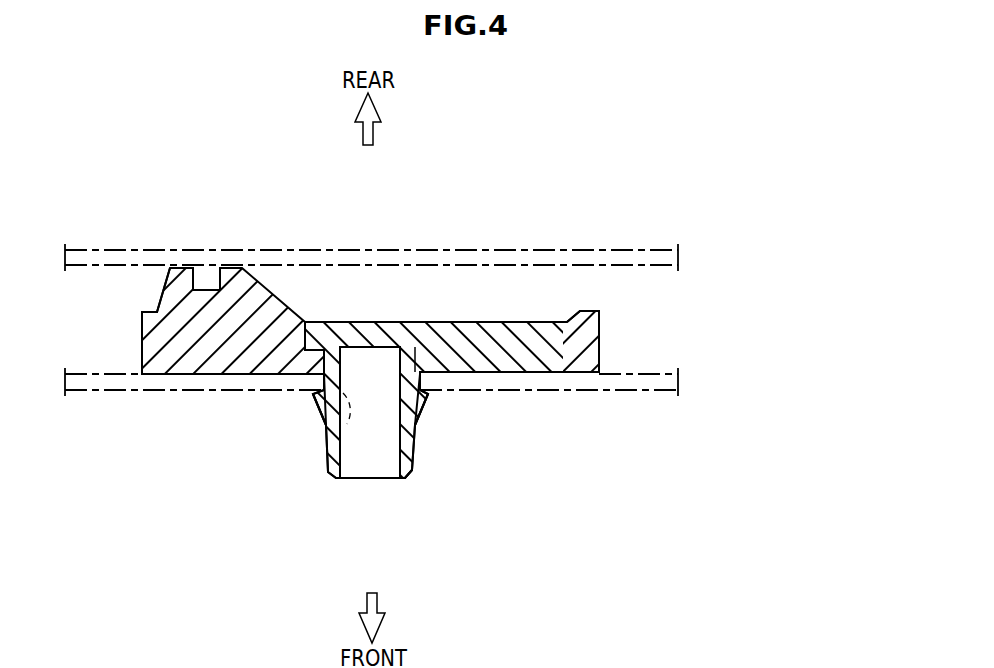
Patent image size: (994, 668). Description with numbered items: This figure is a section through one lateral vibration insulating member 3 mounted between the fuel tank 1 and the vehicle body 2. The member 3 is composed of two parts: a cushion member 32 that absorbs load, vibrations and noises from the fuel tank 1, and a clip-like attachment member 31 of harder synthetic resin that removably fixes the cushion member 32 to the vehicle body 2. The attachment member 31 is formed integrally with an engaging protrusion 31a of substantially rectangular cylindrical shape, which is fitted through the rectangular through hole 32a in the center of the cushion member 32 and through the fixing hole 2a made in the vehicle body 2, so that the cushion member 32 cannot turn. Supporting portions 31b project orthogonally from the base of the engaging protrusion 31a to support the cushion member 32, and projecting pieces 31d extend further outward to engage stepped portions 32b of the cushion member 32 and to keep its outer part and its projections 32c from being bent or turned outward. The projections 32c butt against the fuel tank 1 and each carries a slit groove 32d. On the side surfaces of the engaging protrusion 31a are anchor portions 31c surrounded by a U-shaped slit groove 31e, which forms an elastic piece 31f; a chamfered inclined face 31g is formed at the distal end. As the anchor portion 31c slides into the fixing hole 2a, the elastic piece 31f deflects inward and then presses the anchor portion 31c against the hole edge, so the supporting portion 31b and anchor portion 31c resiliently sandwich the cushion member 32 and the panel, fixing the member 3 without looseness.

The fuel tank 1 is at (653, 270).
The vehicle body 2 is at (101, 397).
The fixing hole 2a is at (326, 432).
The lateral vibration insulating member 3 is at (583, 309).
The attachment member 31 is at (478, 320).
The engaging protrusion 31a is at (410, 478).
The supporting portion 31b is at (546, 352).
The anchor portion 31c is at (320, 397).
The projecting piece 31d is at (563, 340).
The slit groove 31e is at (322, 372).
The elastic piece 31f is at (327, 408).
The chamfered inclined face 31g is at (413, 477).
The cushion member 32 is at (162, 273).
The through hole 32a is at (323, 365).
The stepped portion 32b is at (500, 342).
The projection 32c is at (227, 273).
The slit groove 32d is at (198, 285).